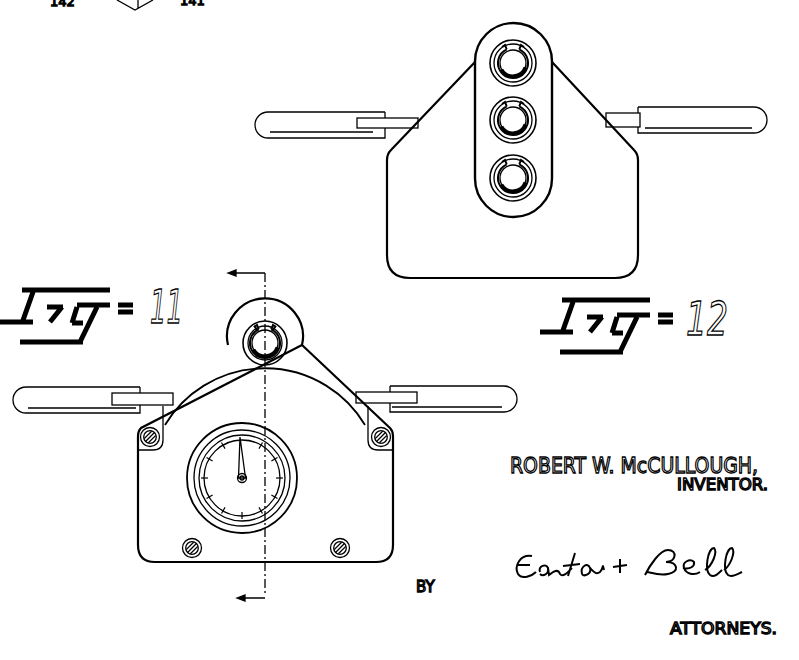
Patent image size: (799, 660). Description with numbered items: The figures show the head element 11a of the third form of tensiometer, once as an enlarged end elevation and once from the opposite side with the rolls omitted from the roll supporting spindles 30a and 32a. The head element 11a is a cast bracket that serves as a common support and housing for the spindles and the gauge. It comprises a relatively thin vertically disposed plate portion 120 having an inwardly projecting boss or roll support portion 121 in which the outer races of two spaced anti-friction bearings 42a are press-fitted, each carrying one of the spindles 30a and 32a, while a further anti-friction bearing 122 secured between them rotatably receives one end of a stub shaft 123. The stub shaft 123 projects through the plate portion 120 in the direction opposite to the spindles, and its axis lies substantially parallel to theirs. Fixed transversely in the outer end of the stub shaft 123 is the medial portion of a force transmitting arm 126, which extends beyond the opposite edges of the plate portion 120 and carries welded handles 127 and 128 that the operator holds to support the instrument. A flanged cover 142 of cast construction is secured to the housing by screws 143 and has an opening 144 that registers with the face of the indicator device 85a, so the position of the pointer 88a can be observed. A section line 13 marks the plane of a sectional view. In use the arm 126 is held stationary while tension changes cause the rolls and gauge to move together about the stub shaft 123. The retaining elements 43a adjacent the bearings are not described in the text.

In FIG. 11, the head element 11a is at (322, 360).
In FIG. 12, the head element 11a is at (581, 96).
In FIG. 11, the section line 13 is at (232, 433).
In FIG. 11, the roll supporting spindle 30a is at (273, 337).
In FIG. 12, the roll supporting spindle 30a is at (527, 53).
In FIG. 12, the roll supporting spindle 32a is at (497, 180).
In FIG. 11, the anti-friction bearing 42a is at (258, 333).
In FIG. 12, the anti-friction bearing 42a is at (533, 62).
In FIG. 11, the retaining ring ears 43a is at (246, 336).
In FIG. 12, the retaining ring ears 43a is at (497, 53).
In FIG. 11, the indicator device 85a is at (290, 468).
In FIG. 11, the pointer 88a is at (240, 444).
In FIG. 12, the plate portion 120 is at (630, 225).
In FIG. 12, the roll support portion 121 is at (547, 143).
In FIG. 12, the anti-friction bearing 122 is at (532, 122).
In FIG. 12, the stub shaft 123 is at (497, 115).
In FIG. 11, the force transmitting arm 126 is at (157, 395).
In FIG. 12, the force transmitting arm 126 is at (418, 118).
In FIG. 11, the handle 127 is at (437, 390).
In FIG. 12, the handle 127 is at (333, 117).
In FIG. 11, the handle 128 is at (88, 392).
In FIG. 12, the handle 128 is at (684, 110).
In FIG. 11, the flanged cover 142 is at (380, 515).
In FIG. 11, the screw 143 is at (140, 437).
In FIG. 11, the opening 144 is at (287, 442).